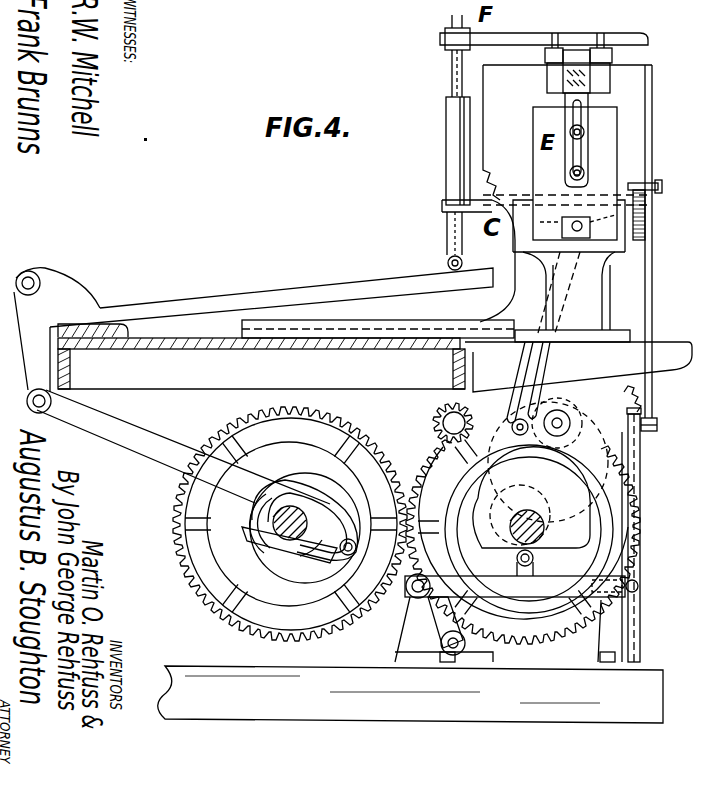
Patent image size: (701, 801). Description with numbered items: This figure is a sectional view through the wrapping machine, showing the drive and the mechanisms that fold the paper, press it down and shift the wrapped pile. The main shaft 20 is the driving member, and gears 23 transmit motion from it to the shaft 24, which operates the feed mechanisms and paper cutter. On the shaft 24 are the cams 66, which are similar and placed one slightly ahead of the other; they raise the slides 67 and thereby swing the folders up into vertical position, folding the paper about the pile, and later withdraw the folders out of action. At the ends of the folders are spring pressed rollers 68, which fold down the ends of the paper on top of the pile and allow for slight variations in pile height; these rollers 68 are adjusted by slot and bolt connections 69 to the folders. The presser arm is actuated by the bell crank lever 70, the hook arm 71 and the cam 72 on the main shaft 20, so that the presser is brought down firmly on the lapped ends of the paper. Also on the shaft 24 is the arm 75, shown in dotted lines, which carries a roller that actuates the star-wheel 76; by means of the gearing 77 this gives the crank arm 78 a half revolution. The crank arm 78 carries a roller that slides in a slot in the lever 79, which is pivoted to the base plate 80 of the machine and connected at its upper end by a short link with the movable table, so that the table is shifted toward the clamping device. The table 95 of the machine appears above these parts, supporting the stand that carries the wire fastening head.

The main shaft 20 is at (292, 508).
The gears 23 is at (233, 431).
The shaft 24 is at (541, 529).
The cams 66 is at (593, 558).
The slides 67 is at (636, 492).
The spring pressed rollers 68 is at (600, 50).
The slot and bolt connections 69 is at (580, 152).
The bell crank lever 70 is at (147, 308).
The hook arm 71 is at (140, 448).
The cam 72 is at (240, 556).
The arm 75 is at (588, 509).
The star-wheel 76 is at (630, 455).
The gearing 77 is at (640, 405).
The crank arm 78 is at (490, 423).
The lever 79 is at (540, 403).
The base plate 80 is at (197, 667).
The table 95 is at (284, 347).